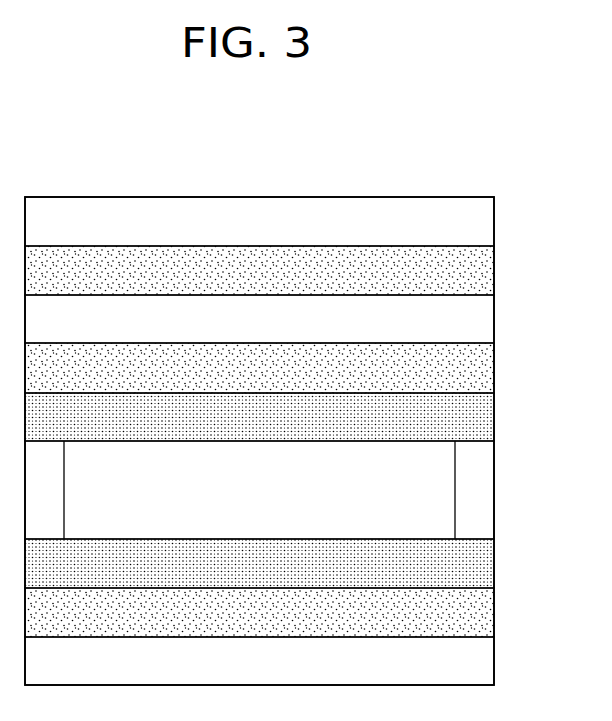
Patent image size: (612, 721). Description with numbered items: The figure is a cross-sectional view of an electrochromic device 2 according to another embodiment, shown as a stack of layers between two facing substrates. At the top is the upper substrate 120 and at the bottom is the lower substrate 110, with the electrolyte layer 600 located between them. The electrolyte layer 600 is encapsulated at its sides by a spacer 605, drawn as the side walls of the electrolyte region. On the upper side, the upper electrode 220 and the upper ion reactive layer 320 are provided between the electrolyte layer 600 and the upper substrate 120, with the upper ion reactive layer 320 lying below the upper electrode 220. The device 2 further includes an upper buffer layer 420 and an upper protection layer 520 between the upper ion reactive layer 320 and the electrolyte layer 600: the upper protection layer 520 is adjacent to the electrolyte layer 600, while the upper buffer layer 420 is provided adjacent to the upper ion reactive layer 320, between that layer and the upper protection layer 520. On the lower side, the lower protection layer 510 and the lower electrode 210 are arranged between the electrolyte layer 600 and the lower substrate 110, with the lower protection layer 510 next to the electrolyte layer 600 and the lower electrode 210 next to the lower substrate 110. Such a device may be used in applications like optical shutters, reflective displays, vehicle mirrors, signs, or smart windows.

The electrochromic device 2 is at (268, 166).
The upper substrate 120 is at (490, 222).
The upper electrode 220 is at (490, 270).
The upper ion reactive layer 320 is at (490, 319).
The upper buffer layer 420 is at (490, 368).
The upper protection layer 520 is at (490, 410).
The electrolyte layer 600 is at (437, 506).
The spacer 605 is at (489, 476).
The lower protection layer 510 is at (490, 563).
The lower electrode 210 is at (490, 611).
The lower substrate 110 is at (490, 660).